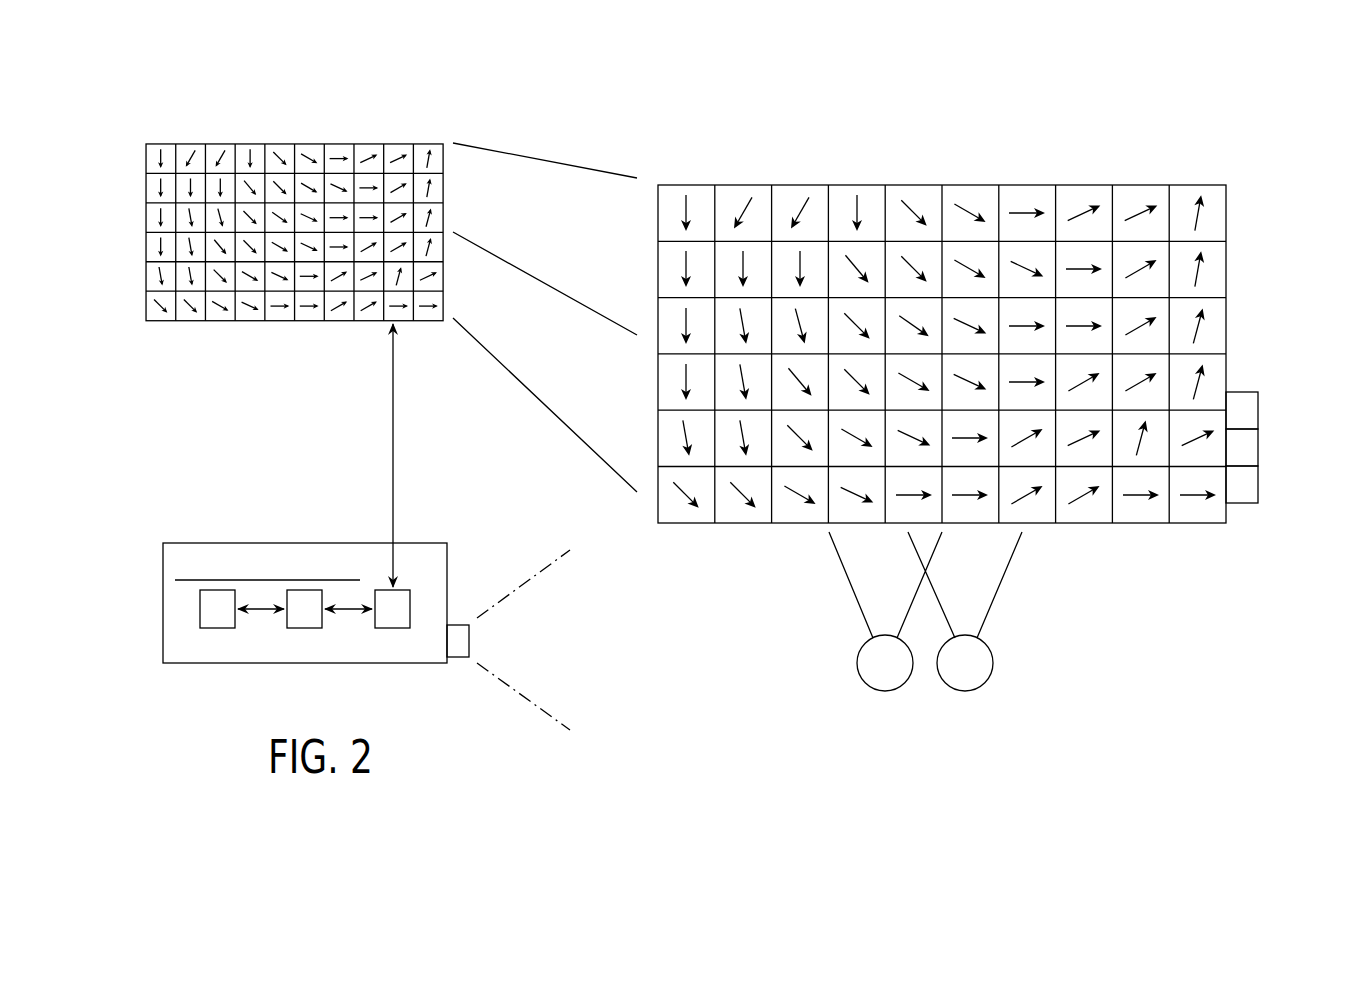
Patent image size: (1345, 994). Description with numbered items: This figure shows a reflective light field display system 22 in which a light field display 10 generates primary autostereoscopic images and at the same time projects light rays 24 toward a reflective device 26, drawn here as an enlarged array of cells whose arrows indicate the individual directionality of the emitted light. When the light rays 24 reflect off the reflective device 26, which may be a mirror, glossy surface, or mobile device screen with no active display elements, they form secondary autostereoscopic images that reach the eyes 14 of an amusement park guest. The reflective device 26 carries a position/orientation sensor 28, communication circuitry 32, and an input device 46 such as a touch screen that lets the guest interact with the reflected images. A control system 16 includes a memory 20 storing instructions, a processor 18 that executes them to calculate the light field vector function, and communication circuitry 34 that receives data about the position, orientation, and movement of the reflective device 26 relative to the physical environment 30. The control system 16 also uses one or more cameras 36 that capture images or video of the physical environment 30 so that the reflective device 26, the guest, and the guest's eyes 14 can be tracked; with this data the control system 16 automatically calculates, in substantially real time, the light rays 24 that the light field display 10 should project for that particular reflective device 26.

The light field display 10 is at (146, 188).
The reflective light field display system 22 is at (1175, 136).
The light rays 24 is at (549, 128).
The reflective device 26 is at (1272, 240).
The position/orientation sensor 28 is at (1260, 409).
The communication circuitry 32 is at (1260, 447).
The input device 46 is at (1260, 485).
The eyes 14 is at (880, 685).
The control system 16 is at (163, 602).
The processor 18 is at (305, 629).
The memory 20 is at (218, 629).
The communication circuitry 34 is at (393, 629).
The camera 36 is at (453, 658).
The physical environment 30 is at (581, 650).